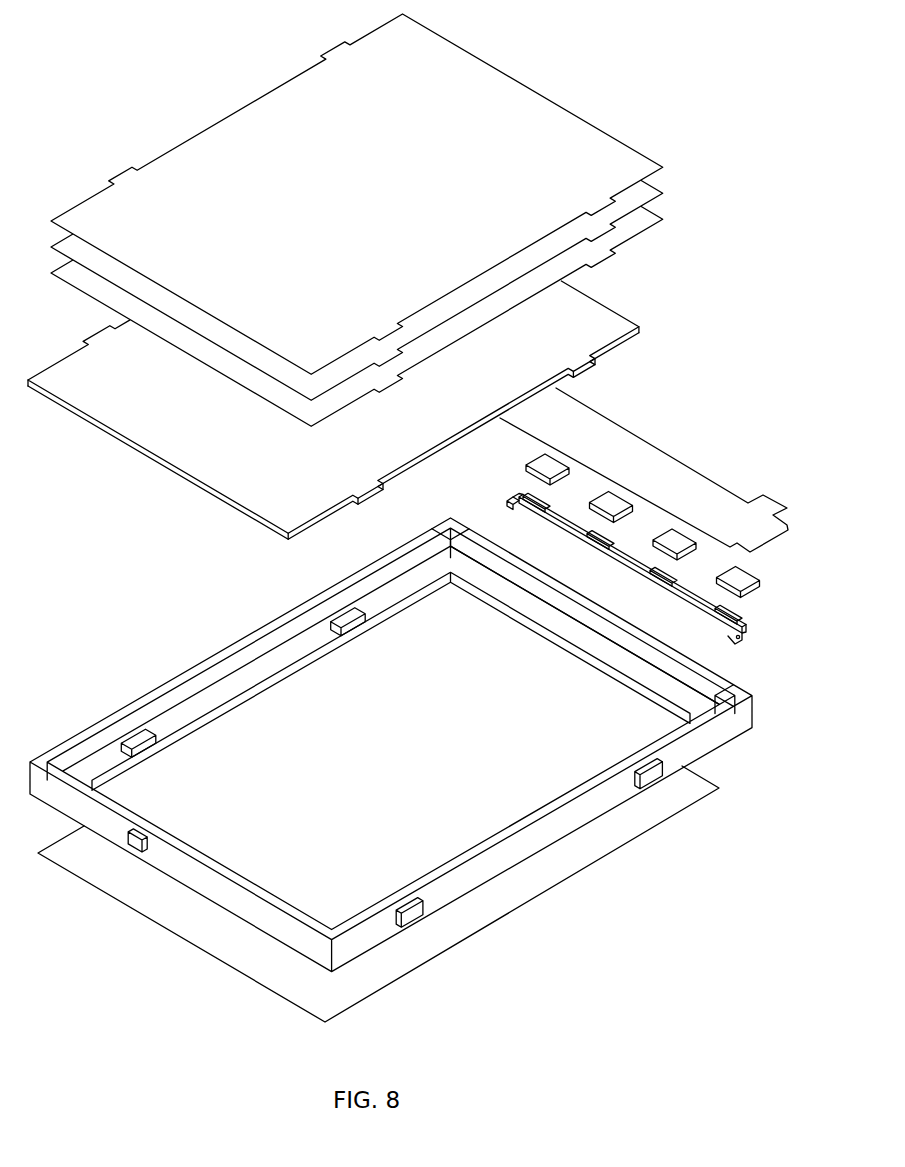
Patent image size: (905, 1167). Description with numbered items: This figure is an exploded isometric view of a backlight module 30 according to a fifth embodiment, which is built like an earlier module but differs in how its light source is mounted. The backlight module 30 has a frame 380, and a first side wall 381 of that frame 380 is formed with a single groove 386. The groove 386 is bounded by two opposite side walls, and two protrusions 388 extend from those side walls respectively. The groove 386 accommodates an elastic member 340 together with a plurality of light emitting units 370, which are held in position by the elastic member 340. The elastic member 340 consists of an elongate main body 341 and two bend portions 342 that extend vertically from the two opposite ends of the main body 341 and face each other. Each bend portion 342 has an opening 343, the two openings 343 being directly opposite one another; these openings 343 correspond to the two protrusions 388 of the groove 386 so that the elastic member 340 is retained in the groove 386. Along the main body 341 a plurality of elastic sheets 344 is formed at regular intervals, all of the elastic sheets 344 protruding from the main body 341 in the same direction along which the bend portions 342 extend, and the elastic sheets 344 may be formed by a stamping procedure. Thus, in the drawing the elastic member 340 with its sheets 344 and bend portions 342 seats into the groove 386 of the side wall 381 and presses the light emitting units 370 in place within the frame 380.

The backlight module 30 is at (236, 40).
The elastic member 340 is at (735, 613).
The main body 341 is at (645, 575).
The bend portions 342 is at (515, 496).
The opening 343 is at (512, 502).
The elastic sheets 344 is at (603, 550).
The light emitting units 370 is at (612, 502).
The frame 380 is at (231, 634).
The first side wall 381 is at (488, 583).
The groove 386 is at (660, 710).
The protrusions 388 is at (447, 584).